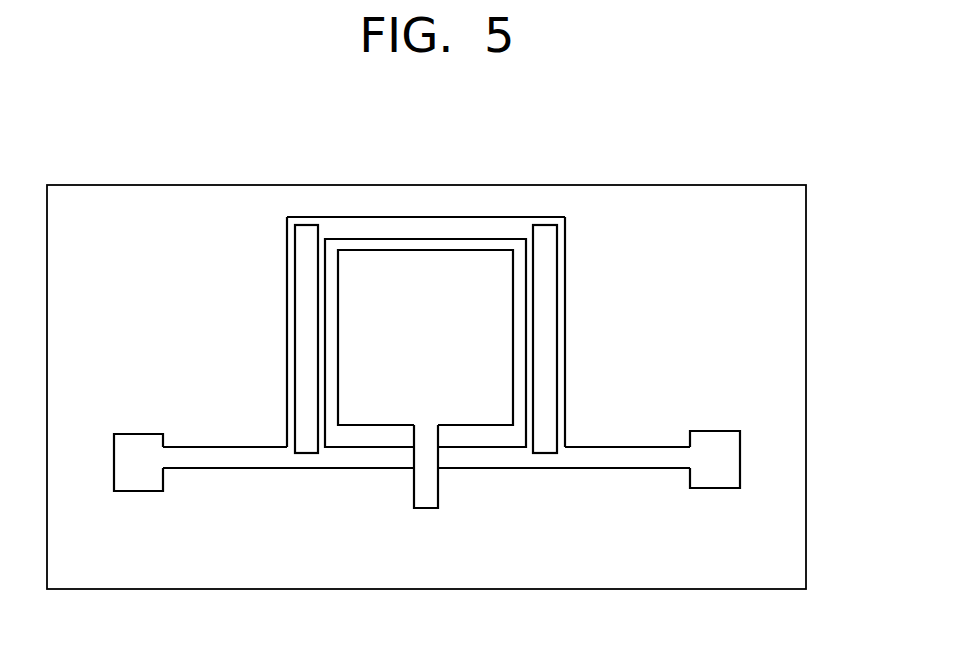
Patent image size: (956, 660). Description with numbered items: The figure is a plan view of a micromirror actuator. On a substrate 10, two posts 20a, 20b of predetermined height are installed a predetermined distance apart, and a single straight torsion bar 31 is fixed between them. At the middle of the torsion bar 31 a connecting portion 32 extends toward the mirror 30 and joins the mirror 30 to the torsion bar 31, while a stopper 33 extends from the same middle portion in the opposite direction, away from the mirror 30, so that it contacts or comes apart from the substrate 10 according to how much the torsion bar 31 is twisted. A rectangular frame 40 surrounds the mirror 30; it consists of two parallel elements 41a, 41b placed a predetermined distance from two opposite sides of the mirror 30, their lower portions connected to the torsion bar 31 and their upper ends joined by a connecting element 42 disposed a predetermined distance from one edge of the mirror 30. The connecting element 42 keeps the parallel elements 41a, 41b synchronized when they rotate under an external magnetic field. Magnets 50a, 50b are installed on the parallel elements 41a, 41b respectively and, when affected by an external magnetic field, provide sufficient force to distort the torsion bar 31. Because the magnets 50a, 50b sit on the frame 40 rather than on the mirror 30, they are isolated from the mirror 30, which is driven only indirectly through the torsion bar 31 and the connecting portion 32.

The substrate 10 is at (790, 362).
The post 20a is at (137, 483).
The post 20b is at (713, 480).
The mirror 30 is at (405, 349).
The torsion bar 31 is at (221, 462).
The connecting portion 32 is at (438, 435).
The stopper 33 is at (424, 503).
The rectangular frame 40 is at (427, 289).
The parallel element 41a is at (287, 384).
The parallel element 41b is at (565, 382).
The connecting element 42 is at (425, 230).
The magnet 50a is at (310, 225).
The magnet 50b is at (547, 225).